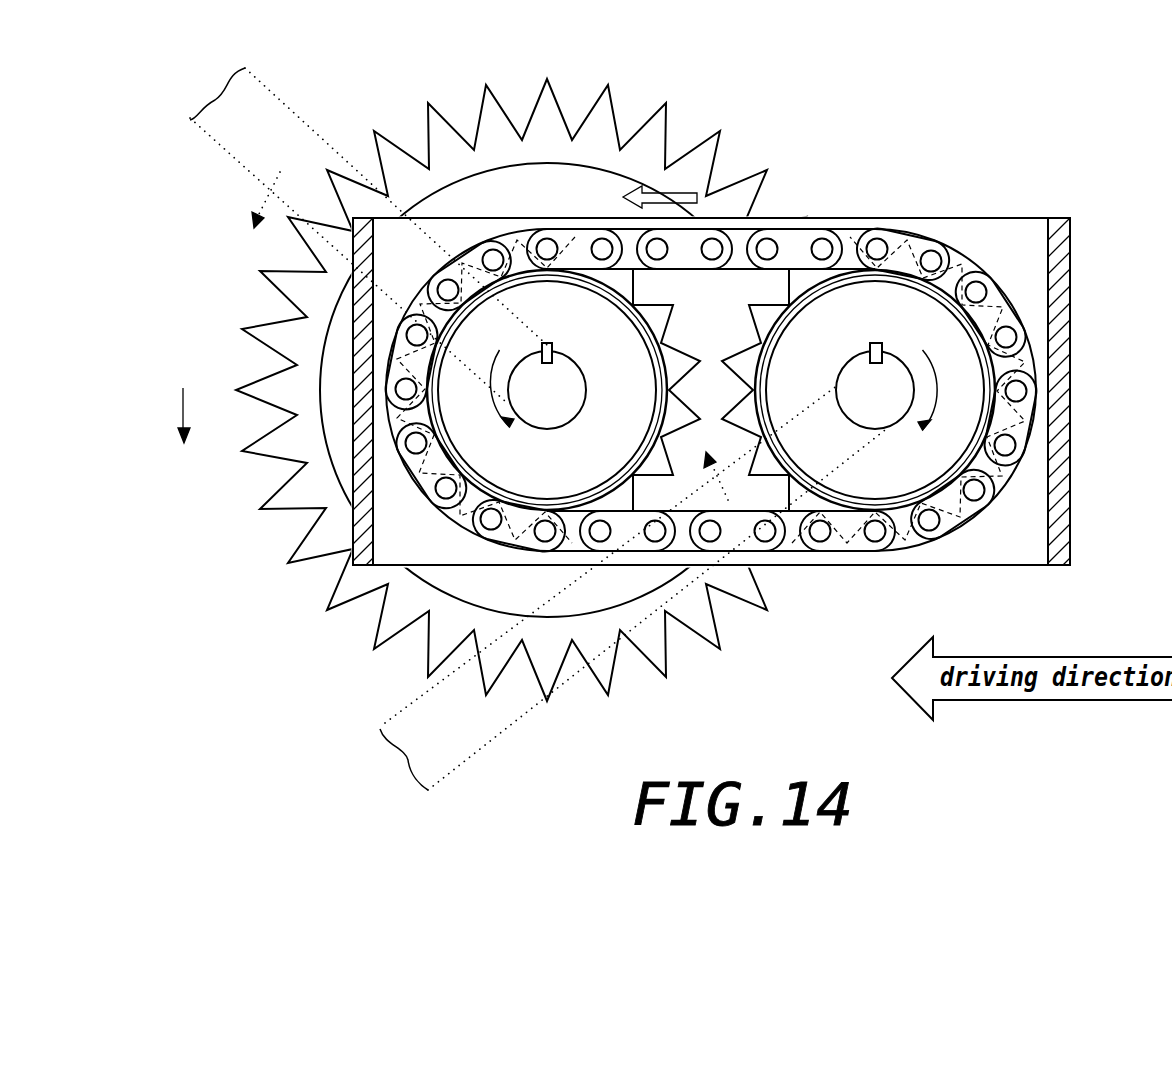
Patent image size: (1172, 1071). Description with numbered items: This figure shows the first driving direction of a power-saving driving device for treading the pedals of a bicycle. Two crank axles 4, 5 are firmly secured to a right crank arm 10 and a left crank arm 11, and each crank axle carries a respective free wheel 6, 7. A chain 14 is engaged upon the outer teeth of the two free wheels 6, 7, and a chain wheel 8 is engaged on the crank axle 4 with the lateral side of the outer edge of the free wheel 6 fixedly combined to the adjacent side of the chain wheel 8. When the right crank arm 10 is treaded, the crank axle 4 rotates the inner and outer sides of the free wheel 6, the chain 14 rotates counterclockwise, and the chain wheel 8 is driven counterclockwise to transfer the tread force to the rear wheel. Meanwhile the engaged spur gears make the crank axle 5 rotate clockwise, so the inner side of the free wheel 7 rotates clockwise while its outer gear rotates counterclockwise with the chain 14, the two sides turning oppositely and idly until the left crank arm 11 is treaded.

The crank axle 4 is at (558, 403).
The crank axle 5 is at (886, 406).
The free wheel 6 is at (570, 295).
The free wheel 7 is at (933, 317).
The chain wheel 8 is at (706, 158).
The right crank arm 10 is at (303, 155).
The left crank arm 11 is at (427, 748).
The chain 14 is at (882, 243).